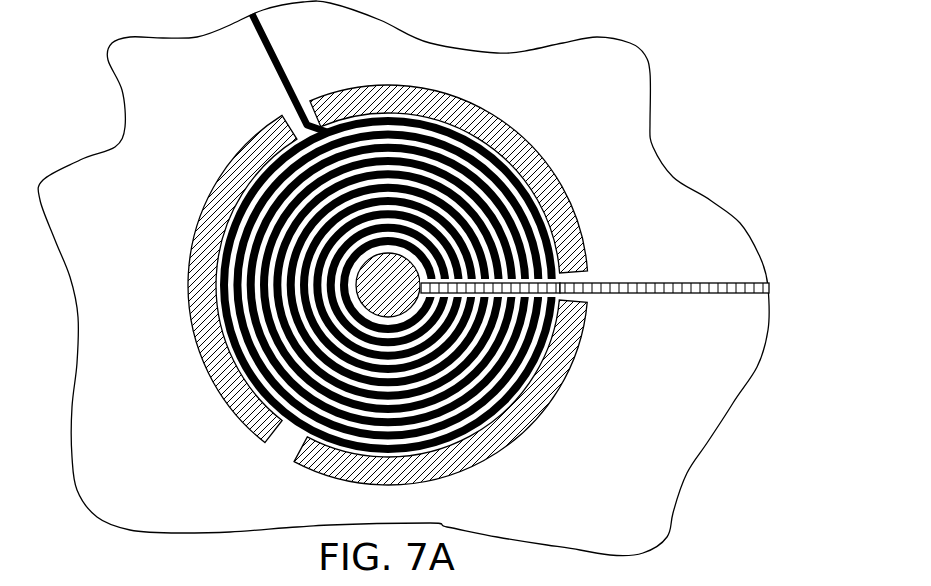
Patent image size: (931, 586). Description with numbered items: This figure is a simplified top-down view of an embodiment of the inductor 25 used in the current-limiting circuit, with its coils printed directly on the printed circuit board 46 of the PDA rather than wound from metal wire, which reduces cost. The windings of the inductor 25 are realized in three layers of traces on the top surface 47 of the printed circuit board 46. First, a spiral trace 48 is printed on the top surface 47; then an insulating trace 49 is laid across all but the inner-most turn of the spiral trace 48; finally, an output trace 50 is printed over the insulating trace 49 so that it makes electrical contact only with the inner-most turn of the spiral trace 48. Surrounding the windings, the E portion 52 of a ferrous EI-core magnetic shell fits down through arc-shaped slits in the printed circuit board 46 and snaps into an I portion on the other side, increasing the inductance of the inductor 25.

The inductor 25 is at (562, 87).
The printed circuit board 46 is at (705, 445).
The top surface 47 is at (648, 432).
The spiral trace 48 is at (287, 68).
The insulating trace 49 is at (560, 293).
The output trace 50 is at (634, 283).
The E portion 52 is at (397, 102).